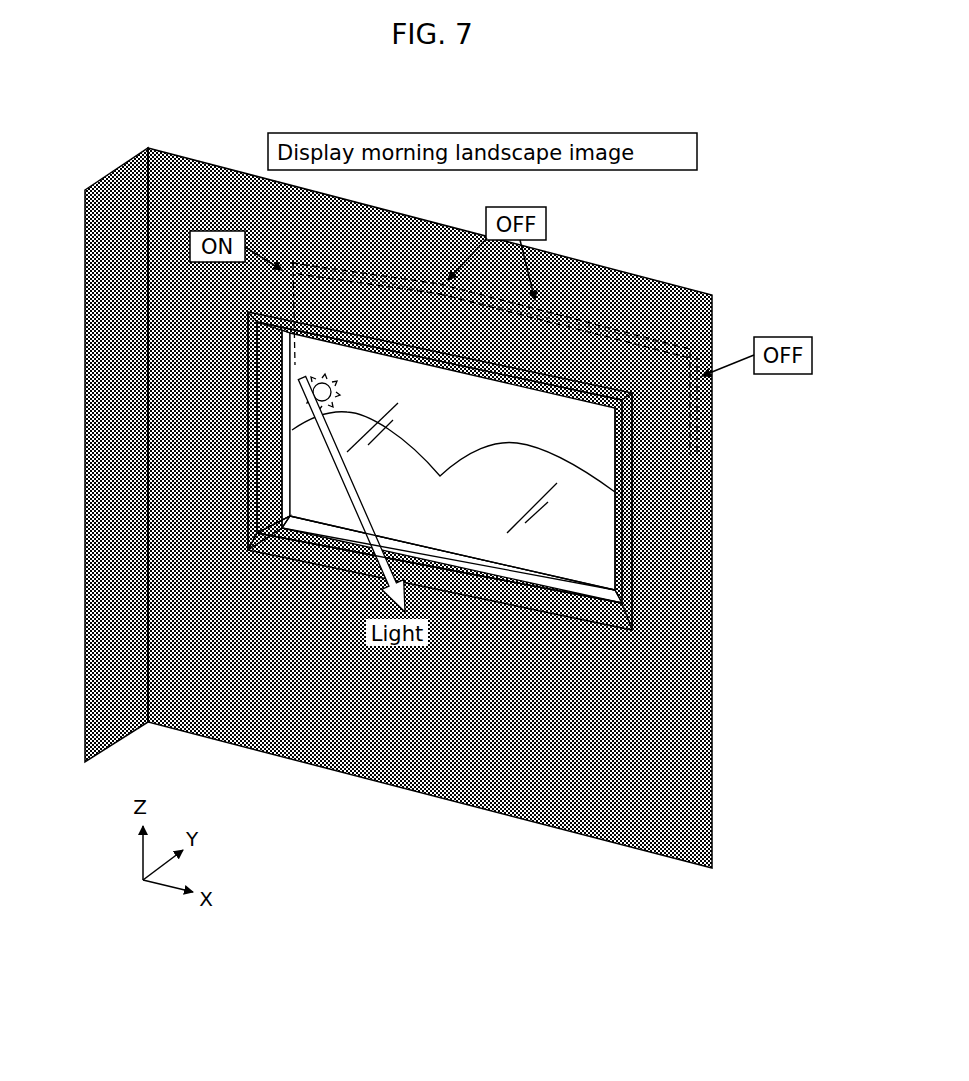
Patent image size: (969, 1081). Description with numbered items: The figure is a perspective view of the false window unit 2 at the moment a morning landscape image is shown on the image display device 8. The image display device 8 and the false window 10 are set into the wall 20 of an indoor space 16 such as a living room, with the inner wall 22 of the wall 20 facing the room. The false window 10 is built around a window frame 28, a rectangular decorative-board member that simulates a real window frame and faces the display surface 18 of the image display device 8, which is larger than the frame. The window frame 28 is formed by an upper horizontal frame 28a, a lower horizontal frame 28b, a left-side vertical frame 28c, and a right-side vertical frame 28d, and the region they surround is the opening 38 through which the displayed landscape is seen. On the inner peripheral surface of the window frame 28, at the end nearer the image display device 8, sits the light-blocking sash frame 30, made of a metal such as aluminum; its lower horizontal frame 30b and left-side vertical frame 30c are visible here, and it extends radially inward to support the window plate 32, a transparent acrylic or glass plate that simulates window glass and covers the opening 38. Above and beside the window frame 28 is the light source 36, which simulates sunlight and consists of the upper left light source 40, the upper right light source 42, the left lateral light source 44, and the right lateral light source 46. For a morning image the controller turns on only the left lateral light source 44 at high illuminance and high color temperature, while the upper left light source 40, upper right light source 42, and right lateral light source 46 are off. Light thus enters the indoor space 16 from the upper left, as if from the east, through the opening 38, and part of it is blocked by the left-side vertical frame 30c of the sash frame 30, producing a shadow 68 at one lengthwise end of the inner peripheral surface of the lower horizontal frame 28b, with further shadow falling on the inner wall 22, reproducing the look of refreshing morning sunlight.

The false window unit 2 is at (665, 302).
The image display device 8 is at (598, 418).
The false window 10 is at (632, 524).
The indoor space 16 is at (330, 725).
The display surface 18 is at (598, 449).
The wall 20 is at (162, 550).
The inner wall 22 is at (150, 575).
The window frame 28 is at (466, 588).
The upper horizontal frame 28a is at (452, 360).
The lower horizontal frame 28b is at (512, 597).
The left-side vertical frame 28c is at (250, 443).
The right-side vertical frame 28d is at (624, 558).
The sash frame 30 is at (445, 556).
The lower horizontal frame 30b is at (560, 584).
The left-side vertical frame 30c is at (282, 394).
The window plate 32 is at (596, 508).
The light source 36 is at (440, 282).
The opening 38 is at (350, 550).
The upper left light source 40 is at (408, 266).
The upper right light source 42 is at (574, 300).
The left lateral light source 44 is at (292, 260).
The right lateral light source 46 is at (692, 356).
The shadow 68 is at (294, 548).